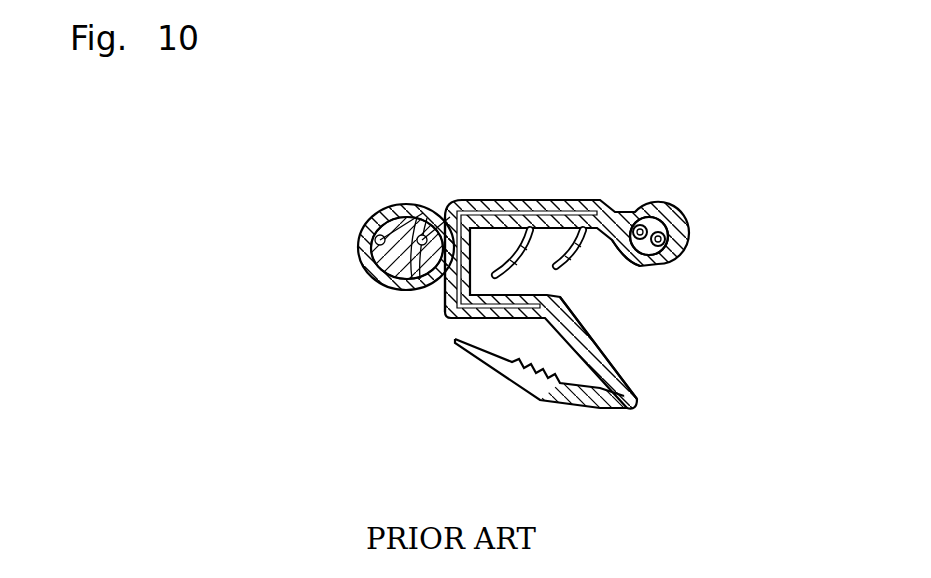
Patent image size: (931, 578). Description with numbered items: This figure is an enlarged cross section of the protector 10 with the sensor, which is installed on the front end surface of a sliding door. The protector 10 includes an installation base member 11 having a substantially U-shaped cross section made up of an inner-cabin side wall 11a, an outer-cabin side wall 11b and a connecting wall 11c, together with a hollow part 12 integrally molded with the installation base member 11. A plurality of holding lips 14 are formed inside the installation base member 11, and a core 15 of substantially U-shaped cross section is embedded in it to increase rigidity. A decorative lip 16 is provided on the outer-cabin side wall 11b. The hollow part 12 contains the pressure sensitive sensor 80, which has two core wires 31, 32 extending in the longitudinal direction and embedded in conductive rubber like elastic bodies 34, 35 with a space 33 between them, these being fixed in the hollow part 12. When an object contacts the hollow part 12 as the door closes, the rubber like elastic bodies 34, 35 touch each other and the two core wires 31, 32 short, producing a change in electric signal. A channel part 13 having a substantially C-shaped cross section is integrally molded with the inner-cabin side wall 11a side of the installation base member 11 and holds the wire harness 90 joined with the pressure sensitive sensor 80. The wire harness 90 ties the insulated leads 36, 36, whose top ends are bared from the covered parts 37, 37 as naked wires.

The protector with the sensor 10 is at (534, 283).
The installation base member 11 is at (516, 286).
The inner-cabin side wall 11a is at (512, 200).
The outer-cabin side wall 11b is at (498, 357).
The connecting wall 11c is at (450, 307).
The hollow part 12 is at (428, 205).
The channel part 13 is at (692, 210).
The holding lips 14 is at (552, 266).
The core 15 is at (460, 320).
The decorative lip 16 is at (511, 335).
The core wire 31 is at (377, 216).
The core wire 32 is at (415, 210).
The space 33 is at (403, 293).
The rubber like elastic body 34 is at (403, 289).
The rubber like elastic body 35 is at (447, 210).
The leads 36 is at (678, 248).
The covered parts 37 is at (648, 222).
The pressure sensitive sensor 80 is at (374, 245).
The wire harness 90 is at (648, 218).